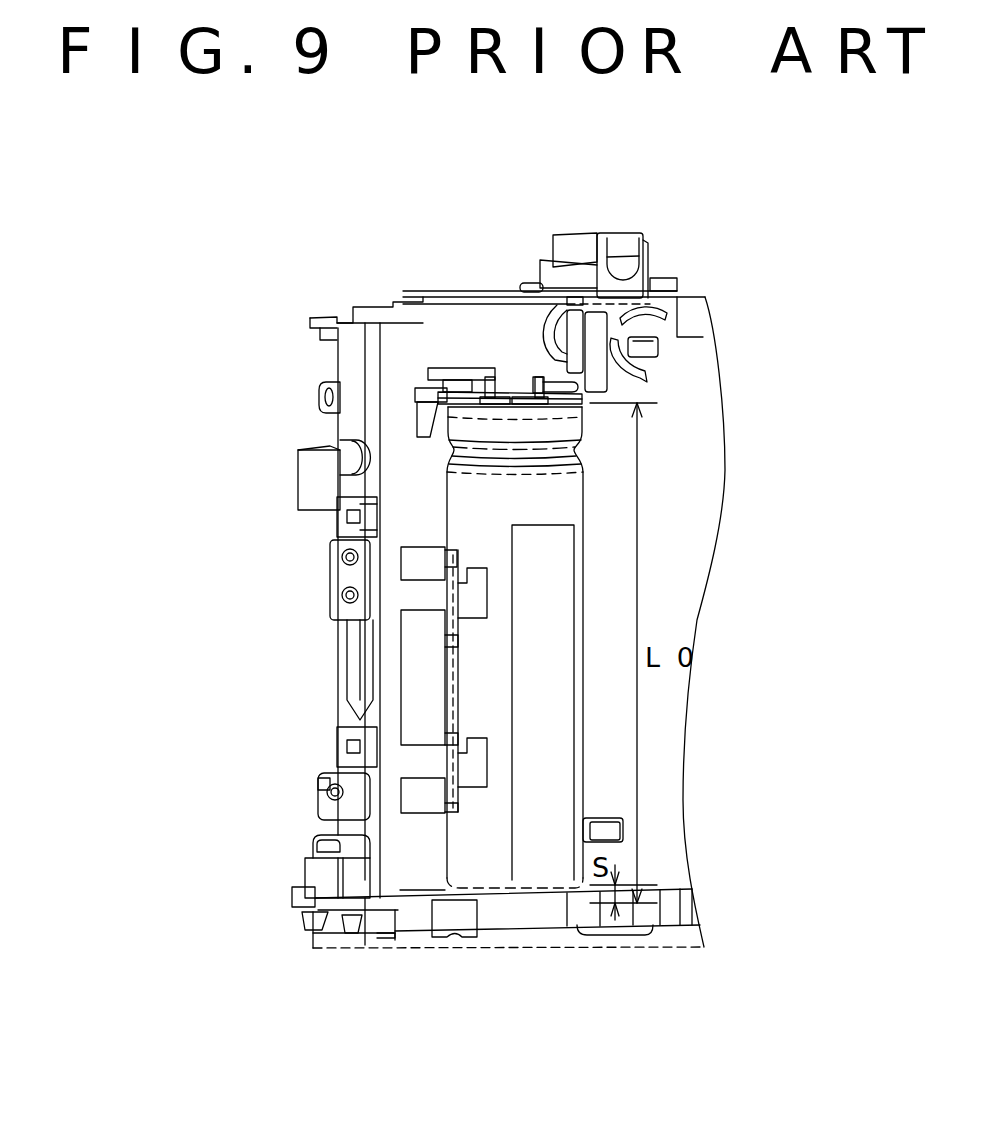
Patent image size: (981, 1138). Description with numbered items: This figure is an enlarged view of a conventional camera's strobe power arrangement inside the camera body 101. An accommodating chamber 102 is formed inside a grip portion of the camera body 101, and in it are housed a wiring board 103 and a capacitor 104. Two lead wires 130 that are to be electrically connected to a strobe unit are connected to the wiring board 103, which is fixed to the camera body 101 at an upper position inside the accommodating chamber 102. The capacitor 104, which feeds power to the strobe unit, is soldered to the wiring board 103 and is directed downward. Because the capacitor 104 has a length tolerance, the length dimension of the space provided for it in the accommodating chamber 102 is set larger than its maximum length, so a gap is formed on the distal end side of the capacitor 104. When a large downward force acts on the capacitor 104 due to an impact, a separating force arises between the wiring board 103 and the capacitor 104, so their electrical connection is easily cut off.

The camera body 101 is at (703, 365).
The accommodating chamber 102 is at (438, 868).
The wiring board 103 is at (445, 403).
The capacitor 104 is at (465, 517).
The lead wire 130 is at (556, 324).